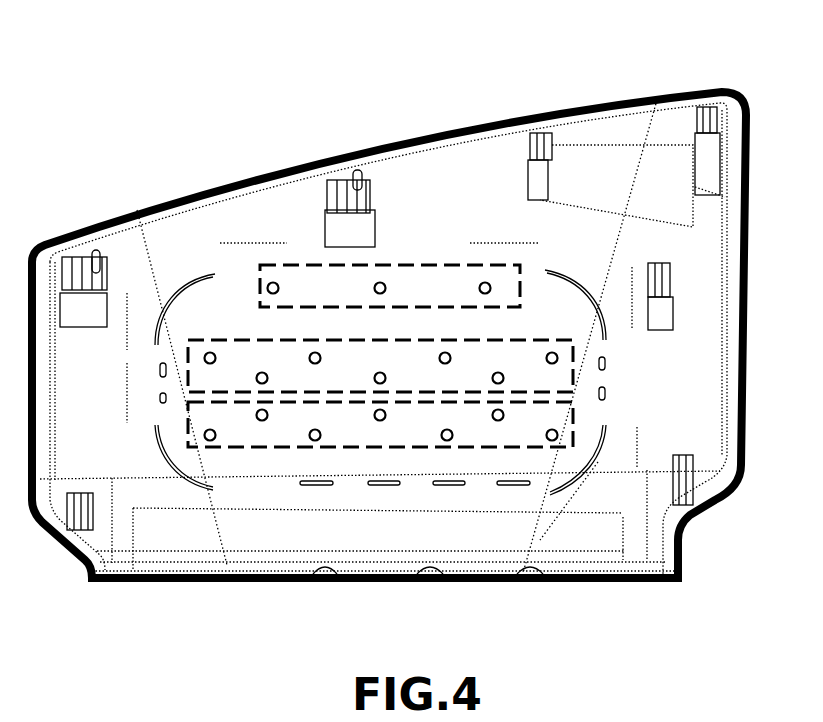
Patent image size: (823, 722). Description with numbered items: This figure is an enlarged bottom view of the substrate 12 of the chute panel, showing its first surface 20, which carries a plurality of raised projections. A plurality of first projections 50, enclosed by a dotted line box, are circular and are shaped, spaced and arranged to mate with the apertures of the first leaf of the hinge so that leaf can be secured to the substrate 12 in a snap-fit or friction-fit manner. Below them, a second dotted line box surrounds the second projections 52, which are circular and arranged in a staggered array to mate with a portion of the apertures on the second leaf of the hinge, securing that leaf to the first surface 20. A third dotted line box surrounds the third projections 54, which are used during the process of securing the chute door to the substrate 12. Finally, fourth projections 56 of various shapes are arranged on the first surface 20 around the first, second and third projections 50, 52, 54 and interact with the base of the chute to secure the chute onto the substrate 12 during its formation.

The substrate 12 is at (190, 193).
The first surface 20 is at (168, 525).
The first projections 50 is at (317, 265).
The second projections 52 is at (518, 340).
The third projections 54 is at (230, 447).
The fourth projections 56 is at (605, 387).